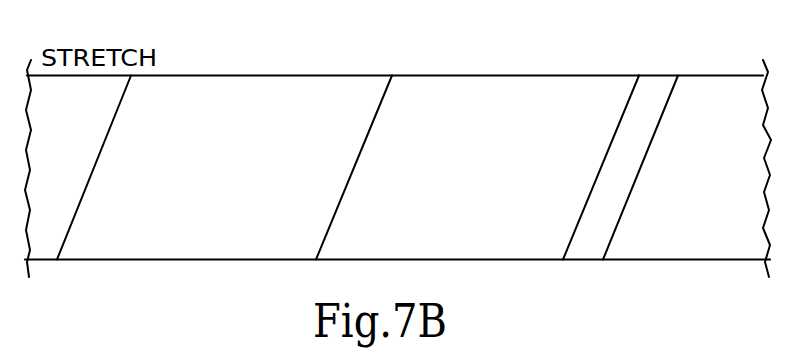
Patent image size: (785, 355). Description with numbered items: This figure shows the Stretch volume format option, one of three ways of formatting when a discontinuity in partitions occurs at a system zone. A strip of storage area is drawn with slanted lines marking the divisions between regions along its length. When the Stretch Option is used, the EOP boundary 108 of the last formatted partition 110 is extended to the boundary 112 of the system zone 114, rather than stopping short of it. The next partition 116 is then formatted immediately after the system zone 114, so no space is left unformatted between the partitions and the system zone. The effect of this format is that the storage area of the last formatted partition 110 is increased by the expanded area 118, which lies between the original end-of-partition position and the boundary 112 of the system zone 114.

The EOP boundary 108 is at (391, 78).
The last formatted partition 110 is at (267, 87).
The boundary of the system zone 112 is at (633, 90).
The system zone 114 is at (656, 100).
The next partition 116 is at (718, 93).
The expanded area 118 is at (523, 81).